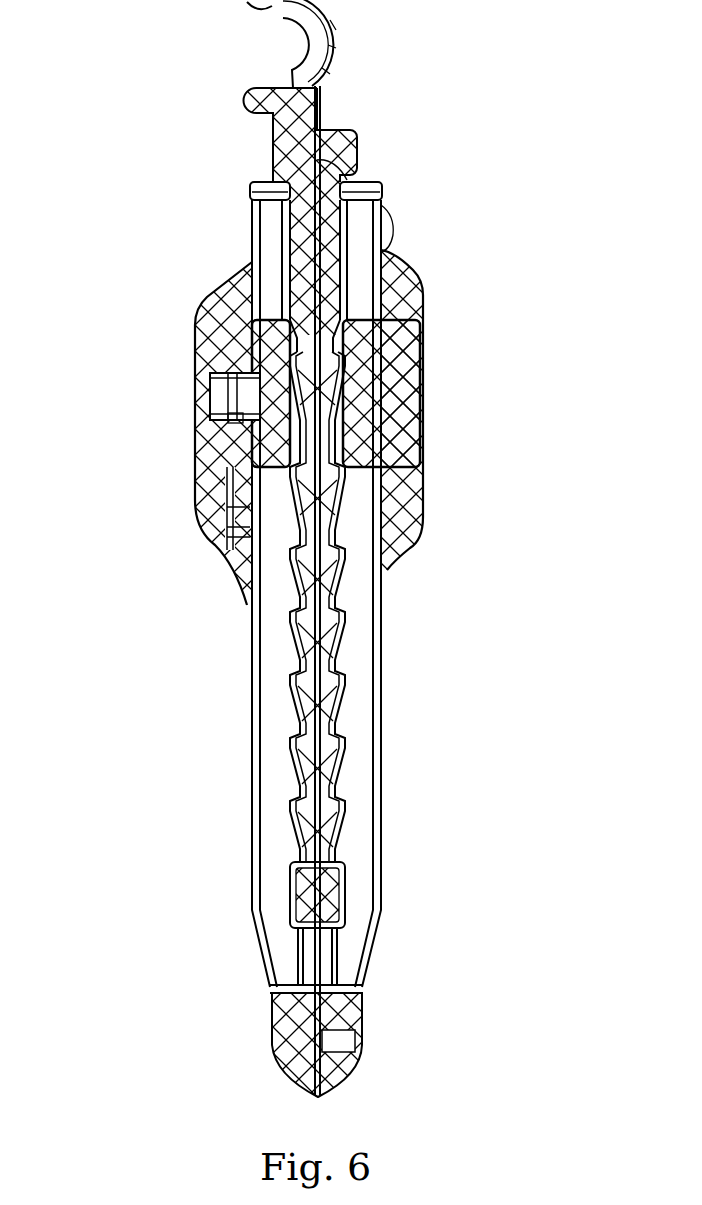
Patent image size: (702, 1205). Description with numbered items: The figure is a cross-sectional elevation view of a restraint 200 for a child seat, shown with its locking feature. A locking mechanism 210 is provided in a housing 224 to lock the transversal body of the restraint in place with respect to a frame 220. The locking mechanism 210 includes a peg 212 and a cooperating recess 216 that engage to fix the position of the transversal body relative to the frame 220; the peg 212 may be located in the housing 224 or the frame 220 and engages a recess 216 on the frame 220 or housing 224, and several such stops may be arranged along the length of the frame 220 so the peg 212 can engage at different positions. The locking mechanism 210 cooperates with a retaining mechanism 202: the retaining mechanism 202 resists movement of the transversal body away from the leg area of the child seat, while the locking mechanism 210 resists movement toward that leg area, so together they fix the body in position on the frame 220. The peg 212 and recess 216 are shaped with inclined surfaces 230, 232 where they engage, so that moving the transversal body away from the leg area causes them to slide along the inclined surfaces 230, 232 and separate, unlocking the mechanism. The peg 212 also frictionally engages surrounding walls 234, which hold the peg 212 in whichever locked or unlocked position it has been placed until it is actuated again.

The restraint 200 is at (490, 728).
The retaining mechanism 202 is at (177, 560).
The locking mechanism 210 is at (215, 395).
The peg 212 is at (230, 403).
The recess 216 is at (292, 722).
The frame 220 is at (360, 847).
The housing 224 is at (208, 297).
The inclined surface 230 is at (300, 392).
The inclined surface 232 is at (292, 835).
The surrounding walls 234 is at (262, 343).